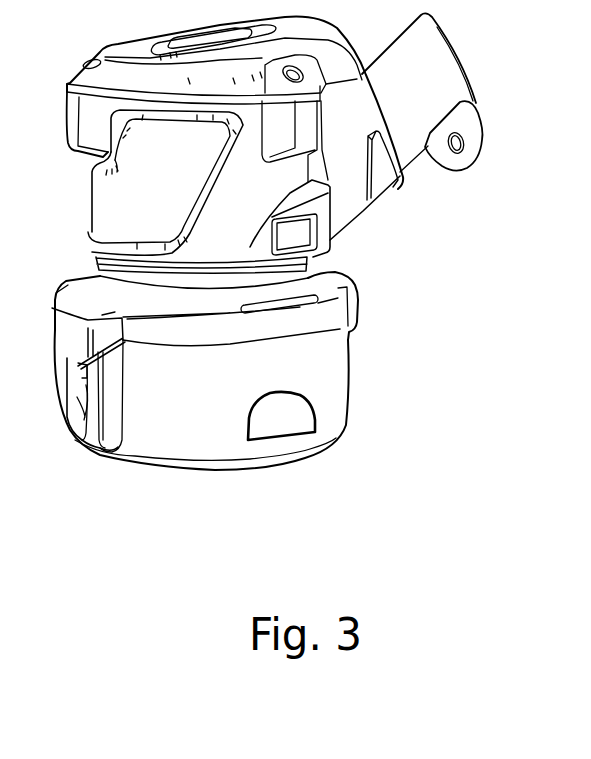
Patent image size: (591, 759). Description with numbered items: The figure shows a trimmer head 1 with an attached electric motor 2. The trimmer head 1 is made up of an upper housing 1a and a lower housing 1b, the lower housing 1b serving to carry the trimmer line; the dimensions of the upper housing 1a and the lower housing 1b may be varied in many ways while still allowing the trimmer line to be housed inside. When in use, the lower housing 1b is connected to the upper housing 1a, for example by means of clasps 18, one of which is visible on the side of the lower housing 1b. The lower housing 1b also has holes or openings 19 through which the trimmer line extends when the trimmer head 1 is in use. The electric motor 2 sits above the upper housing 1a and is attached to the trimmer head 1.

The trimmer head 1 is at (210, 308).
The upper housing 1a is at (85, 307).
The lower housing 1b is at (170, 422).
The electric motor 2 is at (377, 194).
The clasp 18 is at (285, 400).
The hole or opening 19 is at (83, 436).